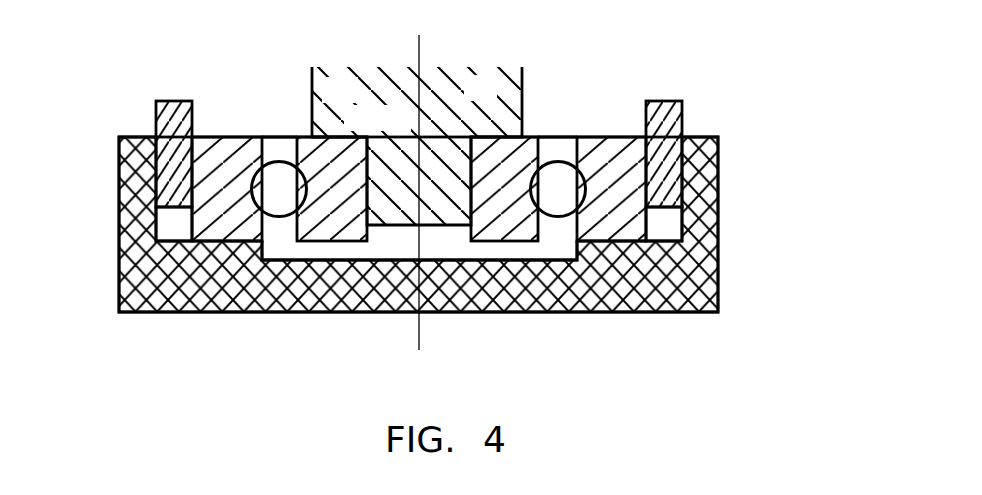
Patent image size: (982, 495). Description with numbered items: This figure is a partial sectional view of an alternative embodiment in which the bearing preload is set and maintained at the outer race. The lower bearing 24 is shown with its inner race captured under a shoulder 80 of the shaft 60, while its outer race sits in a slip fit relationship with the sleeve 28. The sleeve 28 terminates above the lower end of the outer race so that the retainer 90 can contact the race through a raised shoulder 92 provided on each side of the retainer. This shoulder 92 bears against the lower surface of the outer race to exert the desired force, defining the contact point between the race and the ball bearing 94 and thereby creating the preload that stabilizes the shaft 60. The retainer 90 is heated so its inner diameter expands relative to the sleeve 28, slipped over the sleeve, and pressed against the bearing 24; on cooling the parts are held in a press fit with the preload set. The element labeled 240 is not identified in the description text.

The lower bearing 24 is at (278, 232).
The sleeve 28 is at (158, 118).
The shaft 60 is at (417, 192).
The shoulder 80 is at (355, 101).
The retainer 90 is at (697, 258).
The raised shoulder 92 is at (587, 263).
The ball bearing 94 is at (553, 197).
The base 240 is at (120, 288).